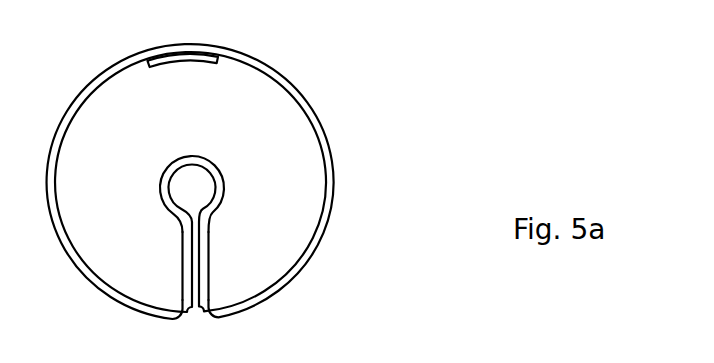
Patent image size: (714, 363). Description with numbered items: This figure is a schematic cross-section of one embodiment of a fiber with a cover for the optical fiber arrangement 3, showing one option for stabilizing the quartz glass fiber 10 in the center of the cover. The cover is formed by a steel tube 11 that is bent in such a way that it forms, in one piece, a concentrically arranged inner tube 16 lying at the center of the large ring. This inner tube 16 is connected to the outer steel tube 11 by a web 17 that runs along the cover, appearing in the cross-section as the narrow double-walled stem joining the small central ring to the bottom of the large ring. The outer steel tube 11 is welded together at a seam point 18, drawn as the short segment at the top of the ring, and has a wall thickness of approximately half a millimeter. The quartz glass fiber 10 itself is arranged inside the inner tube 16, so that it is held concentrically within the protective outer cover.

The optical fiber arrangement 3 is at (223, 165).
The quartz glass fiber 10 is at (190, 184).
The steel tube 11 is at (311, 127).
The inner tube 16 is at (221, 199).
The web 17 is at (196, 270).
The seam point 18 is at (187, 60).